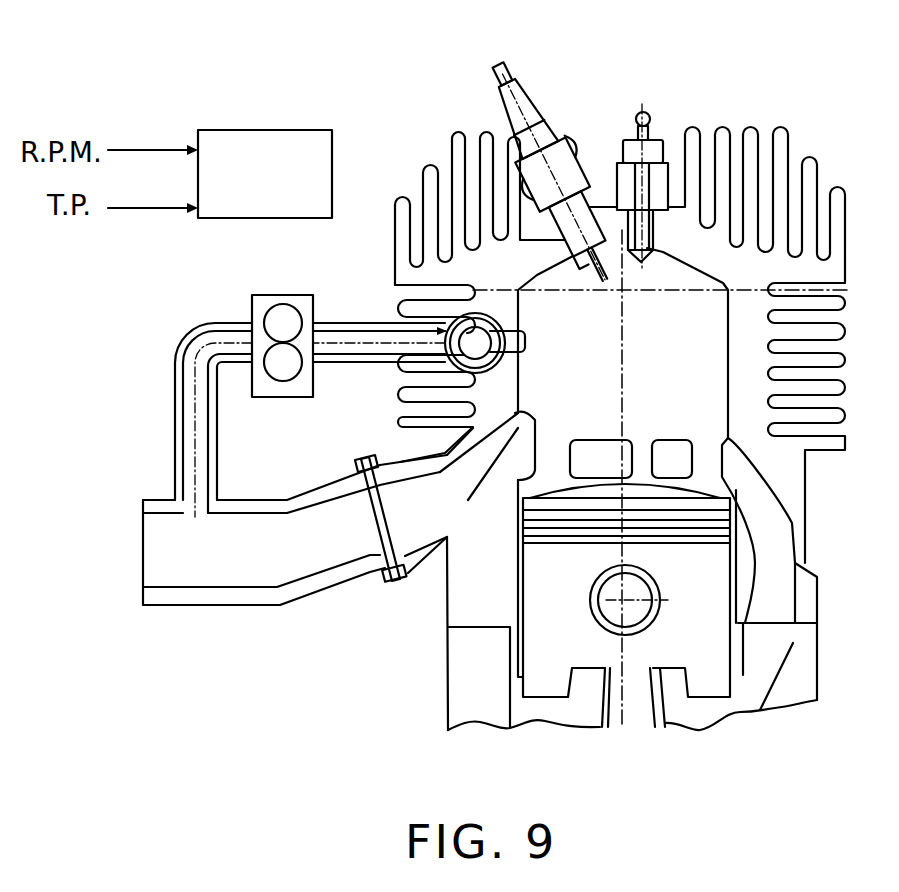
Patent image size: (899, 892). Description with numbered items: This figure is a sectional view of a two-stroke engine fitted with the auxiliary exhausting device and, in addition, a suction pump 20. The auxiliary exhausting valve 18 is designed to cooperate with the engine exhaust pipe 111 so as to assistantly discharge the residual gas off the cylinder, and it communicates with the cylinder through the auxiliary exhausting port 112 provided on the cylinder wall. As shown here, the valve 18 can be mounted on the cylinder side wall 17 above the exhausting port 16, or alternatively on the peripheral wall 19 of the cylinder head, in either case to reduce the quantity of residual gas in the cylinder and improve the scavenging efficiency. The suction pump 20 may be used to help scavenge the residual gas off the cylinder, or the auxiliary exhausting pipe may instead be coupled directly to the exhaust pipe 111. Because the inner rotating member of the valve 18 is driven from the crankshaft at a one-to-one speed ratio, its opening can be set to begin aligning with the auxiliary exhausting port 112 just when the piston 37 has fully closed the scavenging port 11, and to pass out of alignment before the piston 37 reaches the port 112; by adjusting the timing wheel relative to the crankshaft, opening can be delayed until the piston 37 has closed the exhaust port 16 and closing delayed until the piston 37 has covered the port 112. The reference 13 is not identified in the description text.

The scavenging port 11 is at (600, 456).
The cylinder head 13 is at (748, 342).
The exhausting port 16 is at (468, 500).
The cylinder side wall 17 is at (497, 385).
The auxiliary exhausting valve 18 is at (447, 322).
The peripheral wall of the cylinder head 19 is at (497, 273).
The suction pump 20 is at (270, 306).
The piston 37 is at (703, 574).
The engine exhaust pipe 111 is at (293, 547).
The auxiliary exhausting port 112 is at (527, 348).